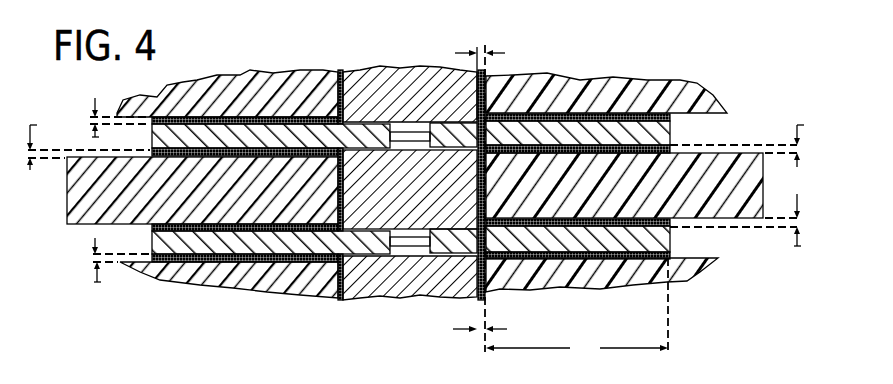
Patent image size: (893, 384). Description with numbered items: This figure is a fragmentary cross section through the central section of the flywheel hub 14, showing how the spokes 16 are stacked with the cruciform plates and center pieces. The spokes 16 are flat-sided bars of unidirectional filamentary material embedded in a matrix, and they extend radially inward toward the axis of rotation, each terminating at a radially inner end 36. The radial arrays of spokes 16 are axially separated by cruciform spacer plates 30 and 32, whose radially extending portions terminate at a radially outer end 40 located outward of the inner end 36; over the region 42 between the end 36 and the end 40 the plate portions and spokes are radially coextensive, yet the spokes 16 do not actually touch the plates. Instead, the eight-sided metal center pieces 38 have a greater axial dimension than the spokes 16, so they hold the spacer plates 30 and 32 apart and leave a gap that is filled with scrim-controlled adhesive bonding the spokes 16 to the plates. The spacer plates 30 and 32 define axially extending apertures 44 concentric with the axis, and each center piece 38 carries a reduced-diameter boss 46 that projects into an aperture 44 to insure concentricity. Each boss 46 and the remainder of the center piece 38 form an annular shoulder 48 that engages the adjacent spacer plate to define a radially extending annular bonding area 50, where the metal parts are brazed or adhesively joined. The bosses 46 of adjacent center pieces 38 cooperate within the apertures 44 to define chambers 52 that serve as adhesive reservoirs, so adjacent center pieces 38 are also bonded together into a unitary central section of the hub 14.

The hub 14 is at (311, 40).
The spokes 16 is at (206, 90).
The spacer plate 30 is at (590, 95).
The spacer plate 32 is at (638, 265).
The radially inner end 36 is at (512, 85).
The center piece 38 is at (376, 70).
The radially outer end 40 is at (670, 127).
The region 42 is at (576, 202).
The apertures 44 is at (425, 152).
The bosses 46 is at (418, 178).
The annular shoulders 48 is at (458, 118).
The annular bonding areas 50 is at (378, 120).
The chambers 52 is at (415, 72).